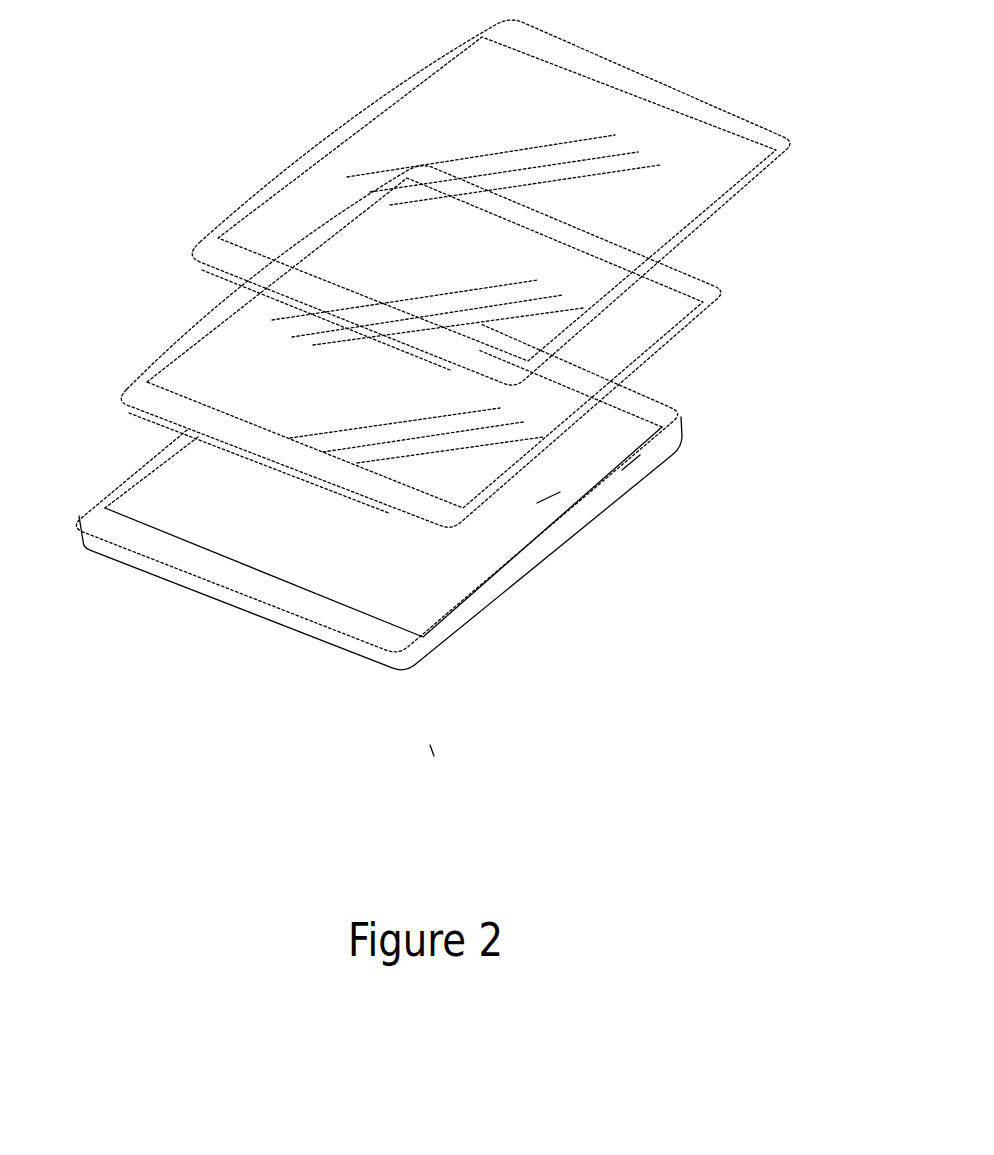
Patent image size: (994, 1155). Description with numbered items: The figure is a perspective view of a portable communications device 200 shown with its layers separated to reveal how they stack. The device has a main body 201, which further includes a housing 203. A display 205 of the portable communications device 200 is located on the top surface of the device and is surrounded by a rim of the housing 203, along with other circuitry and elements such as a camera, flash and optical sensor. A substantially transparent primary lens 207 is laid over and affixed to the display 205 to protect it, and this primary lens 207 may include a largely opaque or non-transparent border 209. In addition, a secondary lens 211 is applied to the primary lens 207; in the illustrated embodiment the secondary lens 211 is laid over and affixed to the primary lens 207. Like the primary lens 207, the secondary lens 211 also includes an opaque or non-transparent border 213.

The portable communications device 200 is at (432, 750).
The main body 201 is at (636, 469).
The housing 203 is at (681, 409).
The display 205 is at (546, 500).
The primary lens 207 is at (633, 338).
The border 209 is at (710, 287).
The secondary lens 211 is at (729, 172).
The border 213 is at (733, 126).